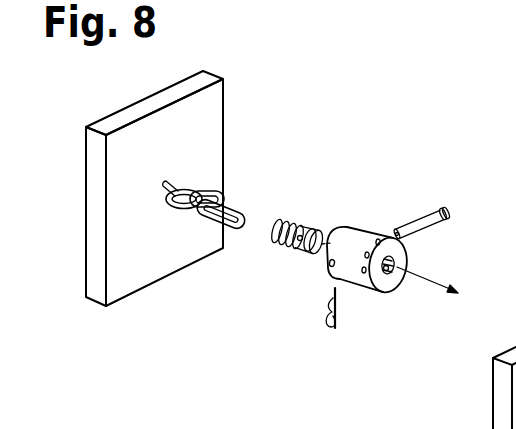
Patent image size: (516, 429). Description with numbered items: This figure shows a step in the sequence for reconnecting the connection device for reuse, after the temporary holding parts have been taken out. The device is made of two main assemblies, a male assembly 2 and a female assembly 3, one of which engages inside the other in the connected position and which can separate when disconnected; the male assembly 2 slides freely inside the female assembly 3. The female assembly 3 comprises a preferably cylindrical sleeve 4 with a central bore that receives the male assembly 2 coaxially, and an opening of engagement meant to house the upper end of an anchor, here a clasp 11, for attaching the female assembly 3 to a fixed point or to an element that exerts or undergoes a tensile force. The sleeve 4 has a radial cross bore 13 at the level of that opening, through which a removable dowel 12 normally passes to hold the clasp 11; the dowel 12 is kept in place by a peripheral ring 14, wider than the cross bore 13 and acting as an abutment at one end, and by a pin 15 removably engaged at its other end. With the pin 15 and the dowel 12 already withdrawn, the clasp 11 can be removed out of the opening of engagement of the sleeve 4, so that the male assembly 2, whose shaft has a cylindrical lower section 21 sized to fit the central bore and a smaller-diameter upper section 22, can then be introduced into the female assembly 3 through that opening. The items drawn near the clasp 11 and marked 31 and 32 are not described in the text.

The male assembly 2 is at (288, 240).
The female assembly 3 is at (374, 274).
The sleeve 4 is at (358, 240).
The clasp 11 is at (222, 200).
The dowel 12 is at (409, 211).
The cross bore 13 is at (328, 268).
The peripheral ring 14 is at (447, 212).
The pin 15 is at (337, 330).
The lower section 21 is at (281, 220).
The upper section 22 is at (301, 240).
The eye ring 31 is at (170, 203).
The board 32 is at (133, 140).